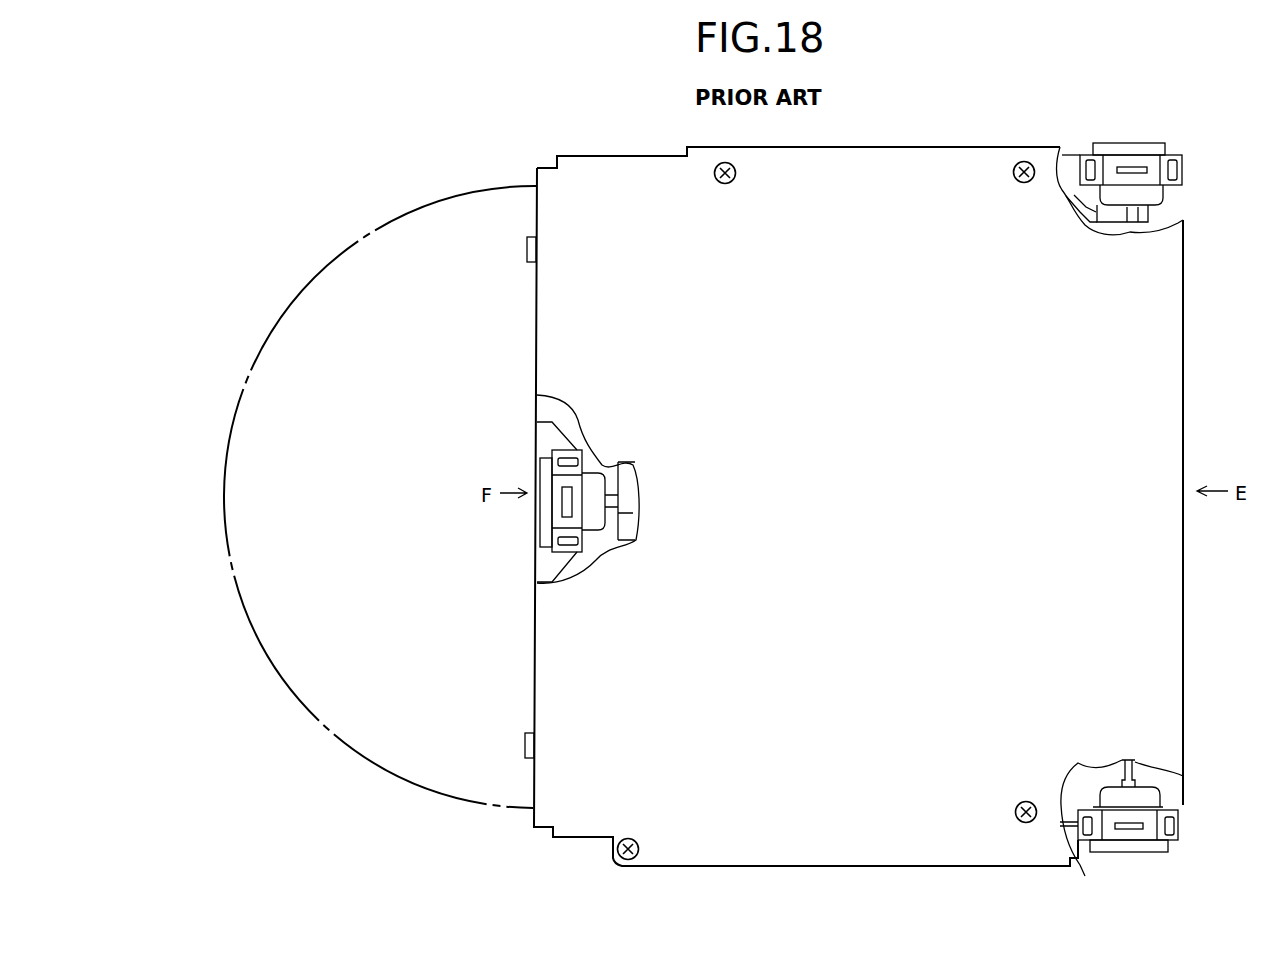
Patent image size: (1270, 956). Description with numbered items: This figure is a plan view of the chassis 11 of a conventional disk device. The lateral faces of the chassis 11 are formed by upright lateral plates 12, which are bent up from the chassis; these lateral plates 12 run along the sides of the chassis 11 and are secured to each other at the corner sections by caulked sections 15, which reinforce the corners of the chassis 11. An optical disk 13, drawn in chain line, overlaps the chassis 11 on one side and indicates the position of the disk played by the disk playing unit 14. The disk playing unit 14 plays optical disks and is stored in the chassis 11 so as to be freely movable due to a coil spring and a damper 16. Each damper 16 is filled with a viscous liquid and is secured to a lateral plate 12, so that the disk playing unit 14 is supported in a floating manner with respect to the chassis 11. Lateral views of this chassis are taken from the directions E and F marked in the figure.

The chassis 11 is at (920, 143).
The upright lateral plate 12 is at (584, 156).
The optical disk 13 is at (349, 244).
The disk playing unit 14 is at (1168, 197).
The caulked section 15 is at (527, 250).
The damper 16 is at (1135, 150).